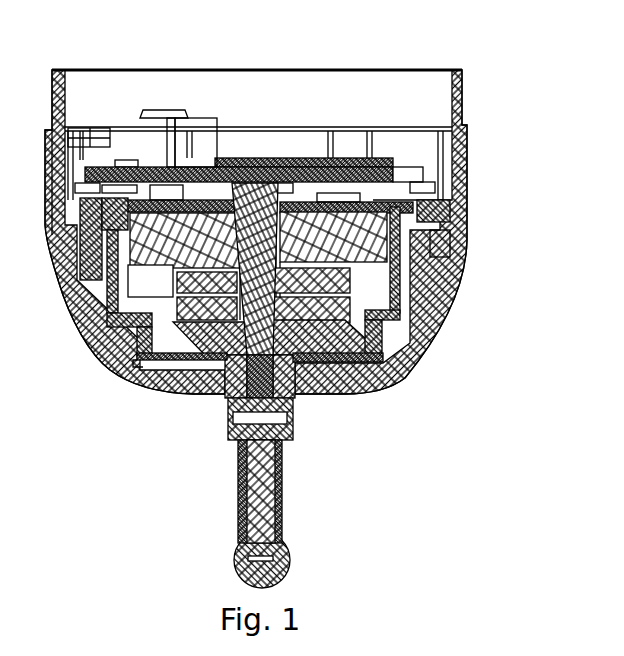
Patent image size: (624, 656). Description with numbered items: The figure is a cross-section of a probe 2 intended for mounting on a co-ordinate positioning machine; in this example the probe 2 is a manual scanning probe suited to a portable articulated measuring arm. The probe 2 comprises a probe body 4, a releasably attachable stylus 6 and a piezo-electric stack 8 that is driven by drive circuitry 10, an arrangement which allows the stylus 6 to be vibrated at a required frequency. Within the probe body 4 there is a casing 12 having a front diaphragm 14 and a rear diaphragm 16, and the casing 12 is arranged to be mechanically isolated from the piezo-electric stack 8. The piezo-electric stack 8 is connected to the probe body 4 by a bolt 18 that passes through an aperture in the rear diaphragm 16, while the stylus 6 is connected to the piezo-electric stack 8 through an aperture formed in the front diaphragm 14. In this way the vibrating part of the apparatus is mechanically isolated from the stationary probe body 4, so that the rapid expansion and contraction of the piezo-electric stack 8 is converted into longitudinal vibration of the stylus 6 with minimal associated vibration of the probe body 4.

The probe 2 is at (497, 97).
The probe body 4 is at (388, 388).
The stylus 6 is at (282, 515).
The piezo-electric stack 8 is at (383, 327).
The drive circuitry 10 is at (427, 176).
The casing 12 is at (380, 337).
The front diaphragm 14 is at (177, 373).
The rear diaphragm 16 is at (167, 207).
The bolt 18 is at (272, 180).